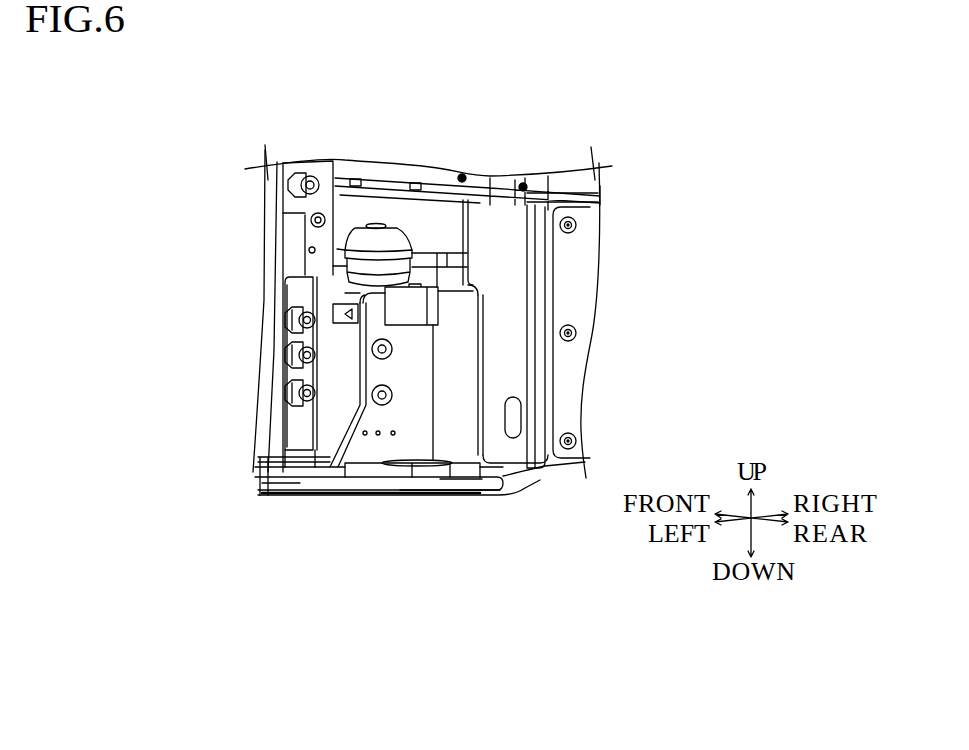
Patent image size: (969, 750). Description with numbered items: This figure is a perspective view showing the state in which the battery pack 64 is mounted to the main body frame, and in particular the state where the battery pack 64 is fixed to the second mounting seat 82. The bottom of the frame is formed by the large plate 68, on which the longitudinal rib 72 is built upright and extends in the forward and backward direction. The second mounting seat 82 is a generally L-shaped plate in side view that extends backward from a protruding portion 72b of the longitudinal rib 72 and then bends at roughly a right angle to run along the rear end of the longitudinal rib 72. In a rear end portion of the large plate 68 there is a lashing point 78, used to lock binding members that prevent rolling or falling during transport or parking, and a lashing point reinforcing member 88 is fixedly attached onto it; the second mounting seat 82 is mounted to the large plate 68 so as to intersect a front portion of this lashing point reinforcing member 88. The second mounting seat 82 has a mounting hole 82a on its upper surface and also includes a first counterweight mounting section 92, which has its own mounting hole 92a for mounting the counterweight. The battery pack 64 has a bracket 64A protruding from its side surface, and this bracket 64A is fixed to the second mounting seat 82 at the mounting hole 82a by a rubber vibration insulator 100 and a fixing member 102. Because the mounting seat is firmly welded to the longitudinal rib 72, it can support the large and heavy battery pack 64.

The battery pack 64 is at (573, 414).
The bracket 64A is at (447, 245).
The large plate 68 is at (287, 483).
The longitudinal rib 72 is at (330, 328).
The protruding portion 72b is at (322, 355).
The lashing point 78 is at (429, 512).
The second mounting seat 82 is at (413, 367).
The mounting hole 82a is at (439, 270).
The lashing point reinforcing member 88 is at (450, 483).
The first counterweight mounting section 92 is at (438, 310).
The mounting hole 92a is at (430, 250).
The rubber vibration insulator 100 is at (333, 266).
The fixing member 102 is at (383, 226).